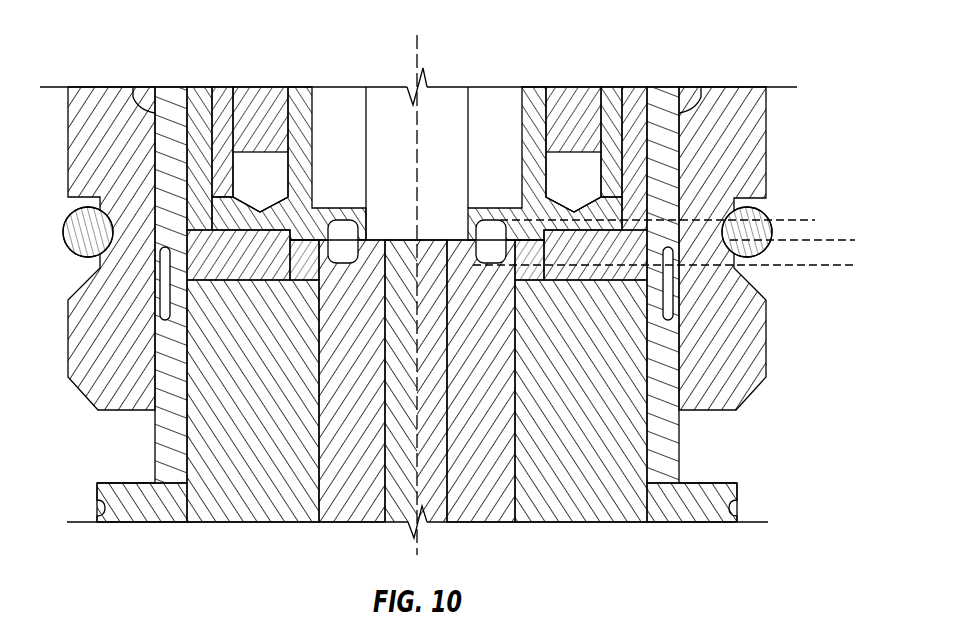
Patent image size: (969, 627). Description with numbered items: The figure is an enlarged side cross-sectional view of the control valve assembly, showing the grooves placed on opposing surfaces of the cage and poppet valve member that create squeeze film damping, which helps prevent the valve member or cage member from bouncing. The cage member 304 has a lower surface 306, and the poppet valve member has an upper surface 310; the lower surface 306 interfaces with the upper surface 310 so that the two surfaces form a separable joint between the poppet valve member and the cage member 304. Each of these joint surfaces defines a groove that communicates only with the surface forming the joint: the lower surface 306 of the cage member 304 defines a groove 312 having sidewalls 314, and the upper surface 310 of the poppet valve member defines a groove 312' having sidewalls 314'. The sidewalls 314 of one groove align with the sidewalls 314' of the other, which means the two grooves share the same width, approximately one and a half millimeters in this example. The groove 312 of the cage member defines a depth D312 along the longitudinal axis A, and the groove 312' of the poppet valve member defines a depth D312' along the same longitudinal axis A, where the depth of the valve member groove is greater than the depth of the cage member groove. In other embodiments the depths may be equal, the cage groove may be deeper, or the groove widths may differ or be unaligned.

The cage member 304 is at (516, 153).
The lower surface 306 is at (318, 213).
The upper surface 310 is at (378, 282).
The groove 312 is at (286, 376).
The groove 312' is at (547, 376).
The sidewalls 314 is at (297, 216).
The sidewalls 314' is at (384, 276).
The depth D312 is at (677, 207).
The depth D312' is at (667, 267).
The longitudinal axis A is at (417, 52).